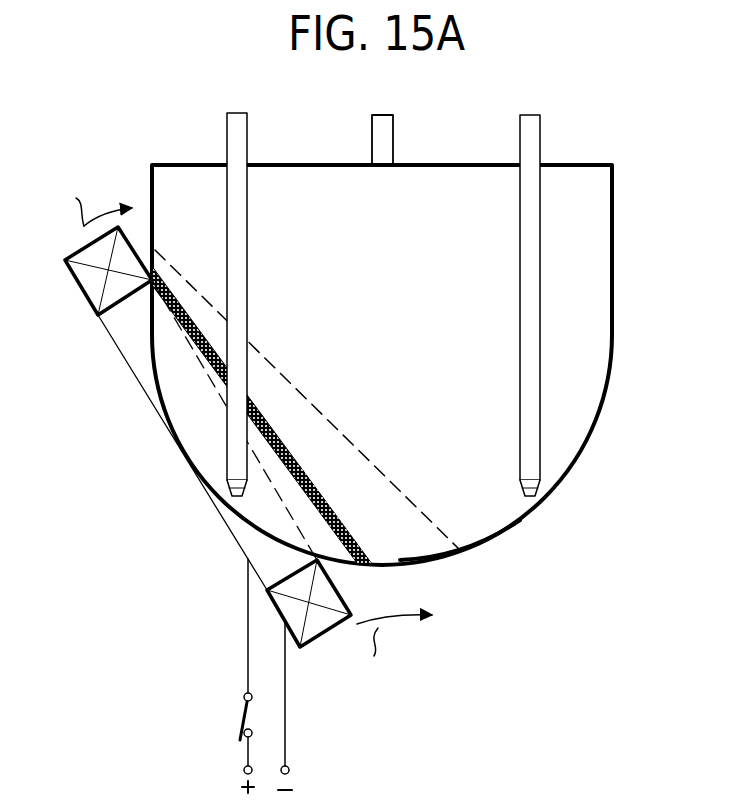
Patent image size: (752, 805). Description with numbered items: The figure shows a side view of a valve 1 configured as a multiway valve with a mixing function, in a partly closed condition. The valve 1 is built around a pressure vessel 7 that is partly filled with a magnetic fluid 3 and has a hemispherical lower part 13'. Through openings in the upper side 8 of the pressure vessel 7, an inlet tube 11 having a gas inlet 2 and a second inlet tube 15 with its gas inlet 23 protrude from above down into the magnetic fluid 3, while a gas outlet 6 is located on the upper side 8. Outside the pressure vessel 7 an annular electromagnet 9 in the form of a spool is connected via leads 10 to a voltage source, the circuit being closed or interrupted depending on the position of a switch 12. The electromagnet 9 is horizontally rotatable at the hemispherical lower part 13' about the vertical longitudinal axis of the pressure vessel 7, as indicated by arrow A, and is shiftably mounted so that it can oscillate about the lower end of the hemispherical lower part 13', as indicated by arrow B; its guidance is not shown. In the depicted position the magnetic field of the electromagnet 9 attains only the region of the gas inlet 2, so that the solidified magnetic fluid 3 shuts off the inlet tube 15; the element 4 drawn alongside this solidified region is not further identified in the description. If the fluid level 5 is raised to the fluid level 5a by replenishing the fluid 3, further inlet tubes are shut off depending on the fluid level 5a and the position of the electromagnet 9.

The valve 1 is at (152, 162).
The gas inlet 2 is at (540, 497).
The magnetic fluid 3 is at (204, 388).
The electrode 4 is at (313, 484).
The fluid level 5 is at (283, 437).
The fluid level 5a is at (414, 492).
The gas outlet 6 is at (395, 142).
The pressure vessel 7 is at (616, 245).
The upper side 8 is at (310, 162).
The electromagnet 9 is at (95, 284).
The leads 10 is at (247, 637).
The inlet tube 11 is at (535, 147).
The switch 12 is at (242, 718).
The hemispherical lower part 13' is at (462, 565).
The second inlet tube 15 is at (234, 132).
The gas inlet 23 is at (226, 495).
The arrow A is at (95, 208).
The arrow B is at (349, 615).